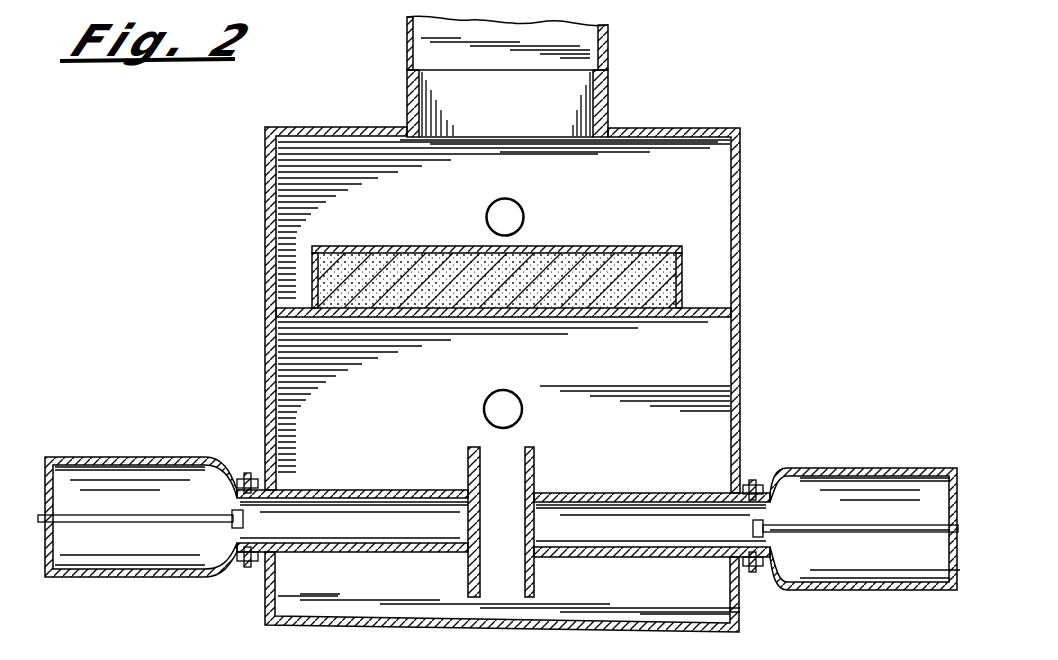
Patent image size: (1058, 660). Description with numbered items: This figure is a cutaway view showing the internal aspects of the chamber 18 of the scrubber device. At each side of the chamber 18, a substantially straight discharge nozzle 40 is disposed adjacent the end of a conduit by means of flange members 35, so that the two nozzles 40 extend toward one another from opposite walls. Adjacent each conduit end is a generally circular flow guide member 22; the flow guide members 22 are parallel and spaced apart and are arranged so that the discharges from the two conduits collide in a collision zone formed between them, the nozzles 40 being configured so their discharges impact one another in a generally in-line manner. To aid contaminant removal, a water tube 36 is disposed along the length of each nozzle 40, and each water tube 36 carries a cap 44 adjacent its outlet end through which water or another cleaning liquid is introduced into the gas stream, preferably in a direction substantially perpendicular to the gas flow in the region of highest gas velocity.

The chamber 18 is at (740, 398).
The flow guide member 22 is at (468, 470).
The flange member 35 is at (243, 472).
The water tube 36 is at (152, 520).
The discharge nozzle 40 is at (378, 490).
The cap 44 is at (208, 470).